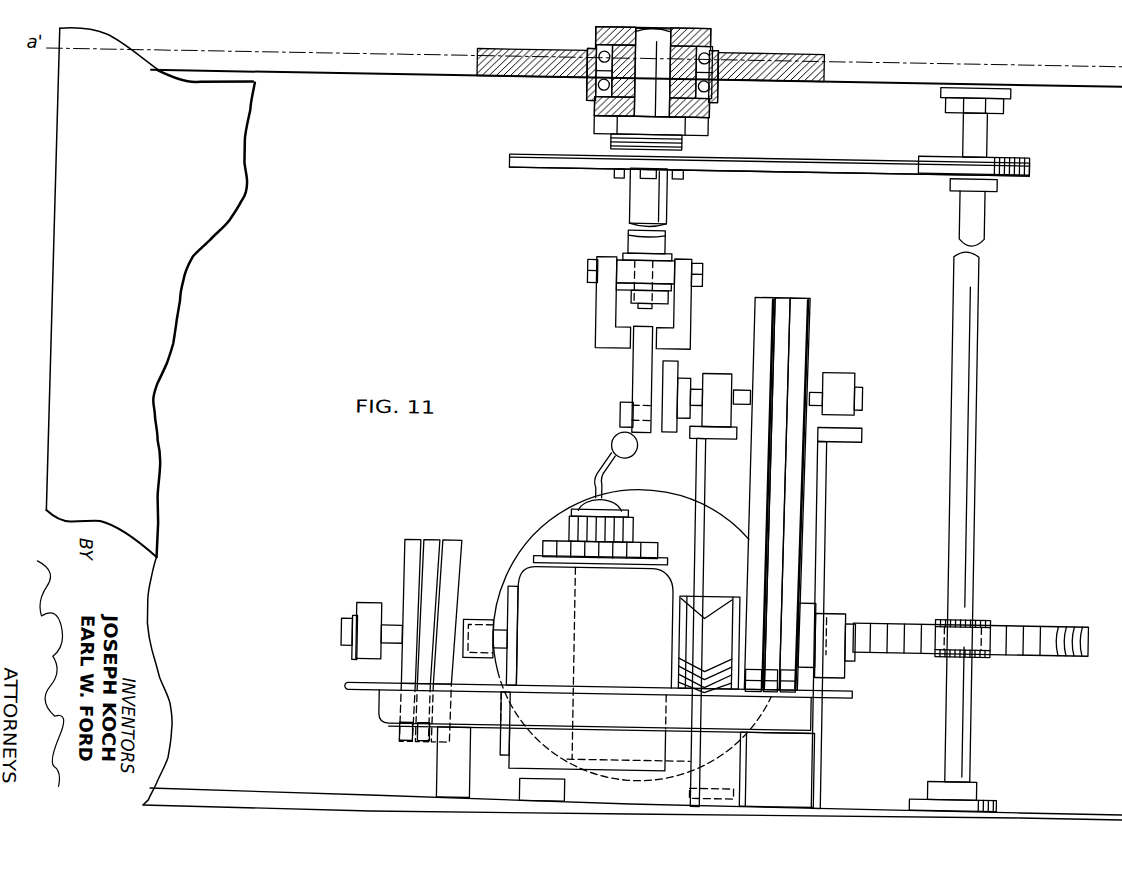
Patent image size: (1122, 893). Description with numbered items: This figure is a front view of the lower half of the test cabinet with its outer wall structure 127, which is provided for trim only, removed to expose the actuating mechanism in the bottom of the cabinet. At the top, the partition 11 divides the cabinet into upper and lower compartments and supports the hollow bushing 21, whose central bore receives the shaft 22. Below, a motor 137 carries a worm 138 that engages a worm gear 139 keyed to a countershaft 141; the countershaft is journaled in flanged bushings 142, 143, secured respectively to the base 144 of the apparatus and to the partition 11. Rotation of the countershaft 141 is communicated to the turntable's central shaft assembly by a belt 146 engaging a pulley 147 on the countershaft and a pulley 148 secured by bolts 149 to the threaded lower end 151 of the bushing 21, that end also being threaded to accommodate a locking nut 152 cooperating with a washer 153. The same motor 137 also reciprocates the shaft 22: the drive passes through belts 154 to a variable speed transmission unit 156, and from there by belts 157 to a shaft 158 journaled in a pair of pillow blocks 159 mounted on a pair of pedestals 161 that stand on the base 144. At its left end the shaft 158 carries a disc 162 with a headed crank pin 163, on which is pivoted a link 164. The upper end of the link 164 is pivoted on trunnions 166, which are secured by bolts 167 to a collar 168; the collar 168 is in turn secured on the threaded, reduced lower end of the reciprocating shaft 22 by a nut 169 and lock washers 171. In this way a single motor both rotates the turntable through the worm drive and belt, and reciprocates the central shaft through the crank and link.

The partition 11 is at (775, 66).
The hollow bushing 21 is at (705, 38).
The shaft 22 is at (640, 40).
The outer wall structure 127 is at (60, 272).
The motor 137 is at (553, 520).
The worm 138 is at (983, 616).
The worm gear 139 is at (1063, 626).
The countershaft 141 is at (968, 710).
The flanged bushing 142 is at (976, 785).
The flanged bushing 143 is at (1003, 104).
The base 144 is at (881, 820).
The belt 146 is at (862, 151).
The pulley 147 is at (1008, 156).
The pulley 148 is at (549, 148).
The bolts 149 is at (641, 178).
The threaded lower end 151 is at (680, 146).
The locking nut 152 is at (705, 125).
The washer 153 is at (583, 104).
The belts 154 is at (430, 535).
The variable speed transmission unit 156 is at (648, 538).
The belts 157 is at (784, 289).
The shaft 158 is at (811, 384).
The pillow blocks 159 is at (712, 371).
The pedestals 161 is at (701, 466).
The disc 162 is at (667, 372).
The headed crank pin 163 is at (643, 407).
The link 164 is at (640, 363).
The trunnions 166 is at (604, 313).
The bolts 167 is at (586, 270).
The collar 168 is at (620, 264).
The nut 169 is at (655, 296).
The lock washers 171 is at (667, 260).